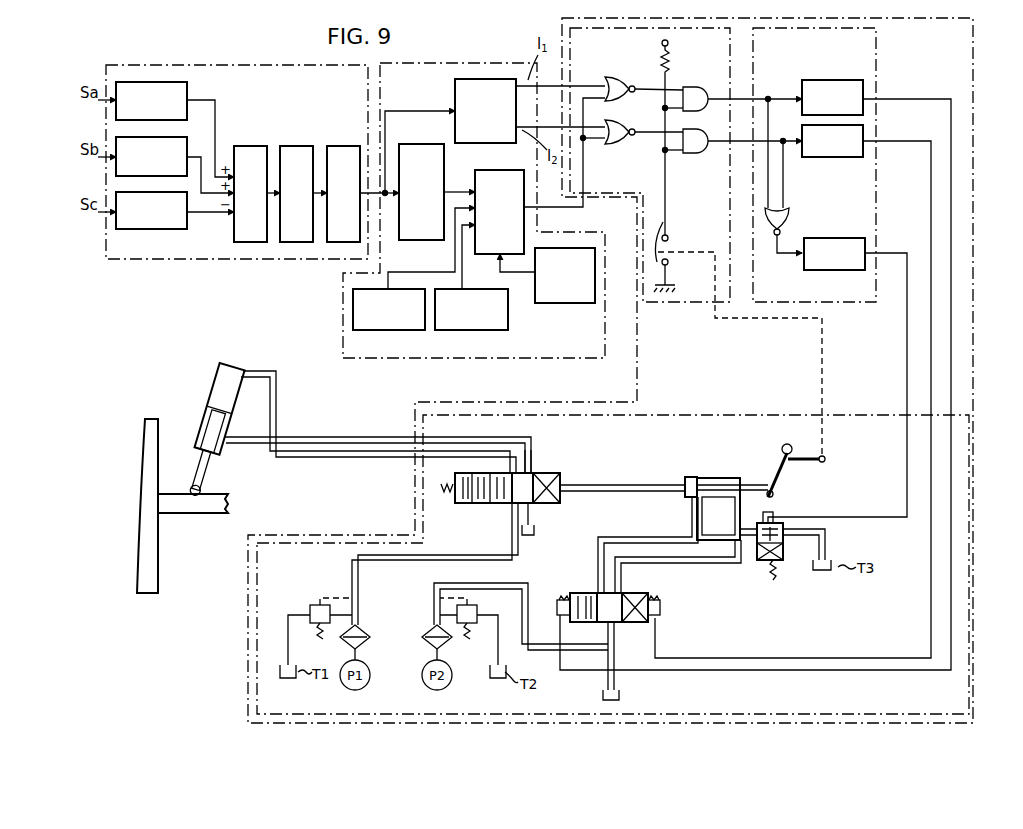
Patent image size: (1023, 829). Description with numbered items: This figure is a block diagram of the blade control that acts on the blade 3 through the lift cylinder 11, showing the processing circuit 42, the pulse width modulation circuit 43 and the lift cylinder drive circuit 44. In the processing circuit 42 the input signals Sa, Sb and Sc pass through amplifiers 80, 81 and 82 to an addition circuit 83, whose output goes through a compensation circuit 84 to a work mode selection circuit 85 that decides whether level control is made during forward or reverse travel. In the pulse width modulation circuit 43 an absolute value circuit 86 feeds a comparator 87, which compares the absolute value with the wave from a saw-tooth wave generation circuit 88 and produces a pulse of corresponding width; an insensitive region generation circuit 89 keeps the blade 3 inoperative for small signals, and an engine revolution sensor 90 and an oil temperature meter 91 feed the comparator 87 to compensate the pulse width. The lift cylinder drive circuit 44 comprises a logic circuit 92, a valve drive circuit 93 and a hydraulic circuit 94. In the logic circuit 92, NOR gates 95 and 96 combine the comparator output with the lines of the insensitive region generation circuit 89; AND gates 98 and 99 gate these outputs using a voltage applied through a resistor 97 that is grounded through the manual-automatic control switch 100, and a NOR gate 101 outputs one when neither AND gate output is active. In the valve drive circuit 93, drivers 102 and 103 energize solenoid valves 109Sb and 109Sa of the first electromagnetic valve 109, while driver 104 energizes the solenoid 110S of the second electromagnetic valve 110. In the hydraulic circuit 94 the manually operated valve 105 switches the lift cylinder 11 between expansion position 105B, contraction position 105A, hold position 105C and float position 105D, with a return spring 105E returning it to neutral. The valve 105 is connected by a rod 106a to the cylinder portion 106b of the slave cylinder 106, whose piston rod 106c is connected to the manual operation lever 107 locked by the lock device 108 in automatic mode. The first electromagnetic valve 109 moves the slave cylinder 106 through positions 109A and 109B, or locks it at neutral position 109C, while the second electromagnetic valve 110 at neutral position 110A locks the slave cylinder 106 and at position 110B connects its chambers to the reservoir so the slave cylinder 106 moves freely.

The blade 3 is at (151, 597).
The lift cylinder 11 is at (217, 368).
The processing circuit 42 is at (228, 66).
The pulse width modulation circuit 43 is at (450, 63).
The lift cylinder drive circuit 44 is at (975, 455).
The amplifier 80 is at (187, 88).
The amplifier 81 is at (184, 139).
The amplifier 82 is at (187, 226).
The addition circuit 83 is at (246, 141).
The compensation circuit 84 is at (292, 141).
The work mode selection circuit 85 is at (339, 141).
The absolute value circuit 86 is at (446, 166).
The comparator 87 is at (498, 171).
The saw-tooth wave generation circuit 88 is at (553, 304).
The insensitive region generation circuit 89 is at (454, 93).
The engine revolution sensor 90 is at (383, 331).
The oil temperature meter 91 is at (460, 331).
The logic circuit 92 is at (673, 303).
The valve drive circuit 93 is at (840, 303).
The hydraulic circuit 94 is at (716, 416).
The NOR gate 95 is at (618, 72).
The NOR gate 96 is at (620, 146).
The resistor 97 is at (672, 62).
The AND gate 98 is at (708, 76).
The AND gate 99 is at (712, 121).
The manual-automatic control switch 100 is at (668, 226).
The NOR gate 101 is at (790, 212).
The driver 102 is at (828, 79).
The driver 103 is at (829, 158).
The driver 104 is at (826, 238).
The manually operated valve 105 is at (528, 482).
The contraction position 105A is at (545, 472).
The expansion position 105B is at (497, 452).
The hold position 105C is at (512, 518).
The float position 105D is at (462, 473).
The return spring 105E is at (445, 497).
The slave cylinder 106 is at (712, 465).
The rod 106a is at (622, 478).
The cylinder portion 106b is at (700, 498).
The piston rod 106c is at (763, 480).
The manual operation lever 107 is at (776, 452).
The lock device 108 is at (810, 452).
The first electromagnetic valve 109 is at (630, 594).
The valve position 109A is at (646, 594).
The valve position 109B is at (588, 591).
The neutral position 109C is at (614, 592).
The solenoid valve 109Sa is at (662, 604).
The solenoid valve 109Sb is at (563, 600).
The second electromagnetic valve 110 is at (788, 543).
The neutral position 110A is at (775, 505).
The valve position 110B is at (785, 565).
The solenoid 110S is at (775, 514).